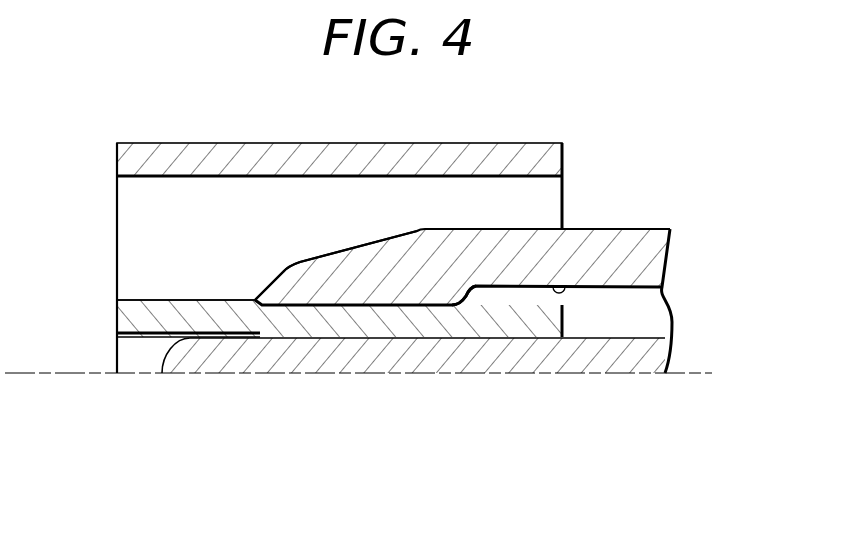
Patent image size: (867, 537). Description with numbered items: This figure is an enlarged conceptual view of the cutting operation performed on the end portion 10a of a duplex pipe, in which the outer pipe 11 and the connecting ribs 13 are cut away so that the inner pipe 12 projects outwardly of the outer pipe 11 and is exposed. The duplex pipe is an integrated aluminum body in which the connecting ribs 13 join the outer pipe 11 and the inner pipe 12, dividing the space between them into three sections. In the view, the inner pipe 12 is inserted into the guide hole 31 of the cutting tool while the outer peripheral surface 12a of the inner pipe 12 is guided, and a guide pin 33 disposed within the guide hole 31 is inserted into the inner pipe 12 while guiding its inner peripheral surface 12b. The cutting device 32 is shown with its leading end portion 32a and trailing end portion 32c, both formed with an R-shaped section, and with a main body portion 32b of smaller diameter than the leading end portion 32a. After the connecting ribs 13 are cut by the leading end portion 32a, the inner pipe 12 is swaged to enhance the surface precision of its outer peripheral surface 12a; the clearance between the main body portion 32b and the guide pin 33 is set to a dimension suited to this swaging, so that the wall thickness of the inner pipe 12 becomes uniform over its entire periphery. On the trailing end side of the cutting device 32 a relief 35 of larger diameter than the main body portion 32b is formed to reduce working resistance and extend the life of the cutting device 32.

The end portion 10a is at (409, 141).
The outer pipe 11 is at (117, 160).
The inner pipe 12 is at (117, 316).
The outer peripheral surface 12a is at (168, 299).
The inner peripheral surface 12b is at (150, 338).
The connecting ribs 13 is at (120, 232).
The guide hole 31 is at (597, 327).
The cutting device 32 is at (372, 314).
The leading end portion 32a is at (255, 299).
The main body portion 32b is at (350, 303).
The trailing end portion 32c is at (452, 302).
The guide pin 33 is at (237, 370).
The relief 35 is at (563, 288).